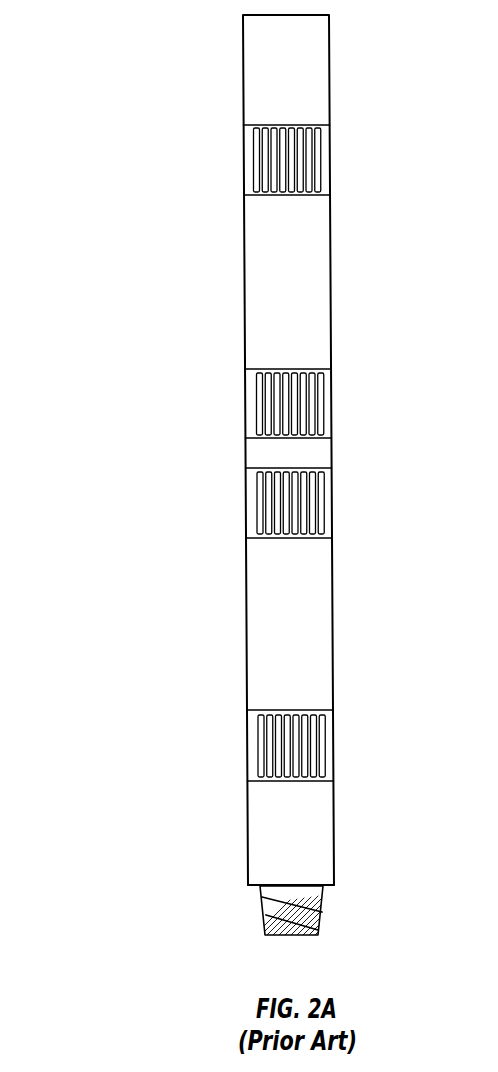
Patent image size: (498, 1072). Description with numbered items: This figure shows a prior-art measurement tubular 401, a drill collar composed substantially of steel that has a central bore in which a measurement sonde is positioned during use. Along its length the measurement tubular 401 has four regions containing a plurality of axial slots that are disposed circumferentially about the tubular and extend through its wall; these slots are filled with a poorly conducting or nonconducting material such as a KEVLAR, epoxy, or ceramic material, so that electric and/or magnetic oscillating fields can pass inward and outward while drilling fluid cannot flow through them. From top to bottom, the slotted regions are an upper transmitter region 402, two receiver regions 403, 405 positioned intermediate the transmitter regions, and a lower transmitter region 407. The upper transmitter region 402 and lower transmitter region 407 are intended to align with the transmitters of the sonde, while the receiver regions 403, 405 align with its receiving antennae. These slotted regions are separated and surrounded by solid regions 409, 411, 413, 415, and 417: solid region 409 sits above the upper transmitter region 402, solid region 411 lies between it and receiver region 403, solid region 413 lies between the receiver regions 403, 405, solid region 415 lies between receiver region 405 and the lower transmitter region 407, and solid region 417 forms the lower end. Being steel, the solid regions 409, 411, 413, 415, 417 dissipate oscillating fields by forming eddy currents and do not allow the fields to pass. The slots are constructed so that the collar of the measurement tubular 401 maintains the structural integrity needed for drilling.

The measurement tubular 401 is at (134, 50).
The upper transmitter region 402 is at (244, 131).
The receiver region 403 is at (245, 377).
The receiver region 405 is at (246, 480).
The lower transmitter region 407 is at (247, 733).
The solid region 409 is at (320, 66).
The solid region 411 is at (320, 255).
The solid region 413 is at (320, 454).
The solid region 415 is at (322, 589).
The solid region 417 is at (323, 829).